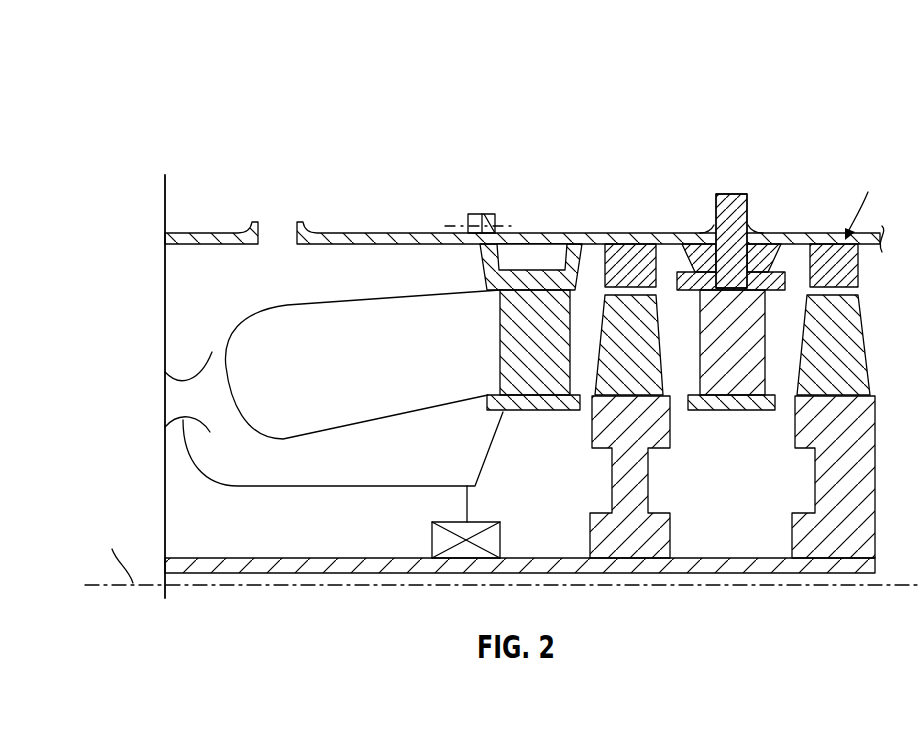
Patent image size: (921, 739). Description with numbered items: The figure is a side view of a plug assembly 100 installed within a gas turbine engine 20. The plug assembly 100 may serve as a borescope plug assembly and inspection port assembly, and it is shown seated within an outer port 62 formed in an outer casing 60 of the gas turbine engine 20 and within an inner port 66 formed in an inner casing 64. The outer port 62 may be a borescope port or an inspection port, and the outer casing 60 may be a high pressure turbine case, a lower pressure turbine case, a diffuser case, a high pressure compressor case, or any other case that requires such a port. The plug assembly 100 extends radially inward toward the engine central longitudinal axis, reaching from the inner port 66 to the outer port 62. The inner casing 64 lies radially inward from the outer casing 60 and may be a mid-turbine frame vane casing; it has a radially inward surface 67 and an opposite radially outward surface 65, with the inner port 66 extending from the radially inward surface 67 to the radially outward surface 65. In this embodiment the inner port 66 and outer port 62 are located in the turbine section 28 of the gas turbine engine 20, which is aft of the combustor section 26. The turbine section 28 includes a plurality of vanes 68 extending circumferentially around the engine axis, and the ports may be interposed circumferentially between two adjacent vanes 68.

The gas turbine engine 20 is at (170, 99).
The combustor section 26 is at (455, 381).
The turbine section 28 is at (742, 449).
The outer casing 60 is at (165, 240).
The outer port 62 is at (712, 233).
The inner casing 64 is at (808, 297).
The radially outward surface 65 is at (757, 282).
The inner port 66 is at (720, 283).
The radially inward surface 67 is at (750, 290).
The vanes 68 is at (850, 335).
The plug assembly 100 is at (728, 194).